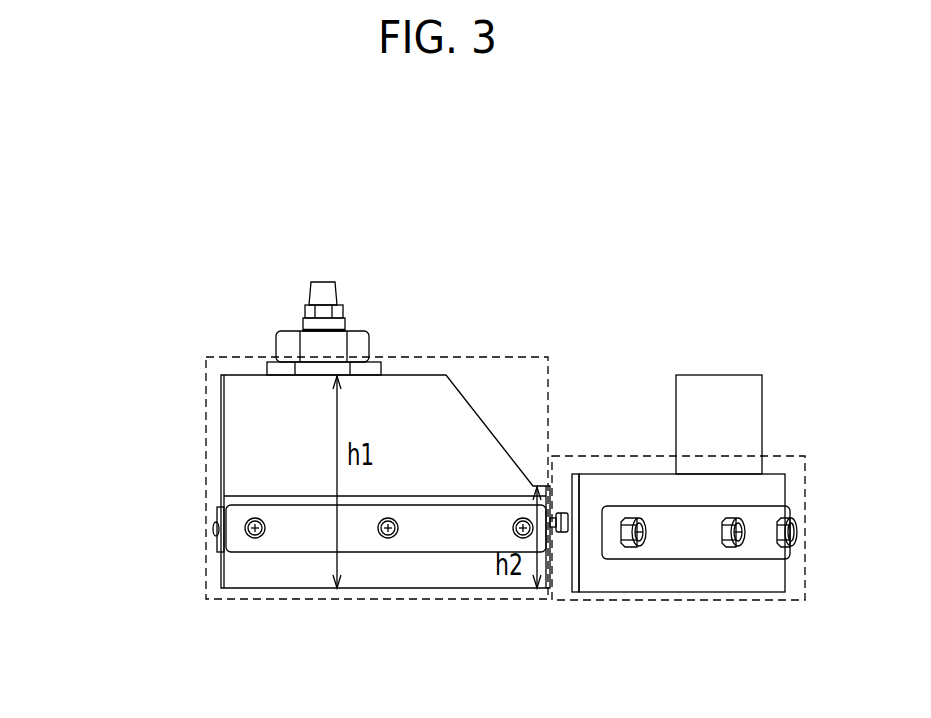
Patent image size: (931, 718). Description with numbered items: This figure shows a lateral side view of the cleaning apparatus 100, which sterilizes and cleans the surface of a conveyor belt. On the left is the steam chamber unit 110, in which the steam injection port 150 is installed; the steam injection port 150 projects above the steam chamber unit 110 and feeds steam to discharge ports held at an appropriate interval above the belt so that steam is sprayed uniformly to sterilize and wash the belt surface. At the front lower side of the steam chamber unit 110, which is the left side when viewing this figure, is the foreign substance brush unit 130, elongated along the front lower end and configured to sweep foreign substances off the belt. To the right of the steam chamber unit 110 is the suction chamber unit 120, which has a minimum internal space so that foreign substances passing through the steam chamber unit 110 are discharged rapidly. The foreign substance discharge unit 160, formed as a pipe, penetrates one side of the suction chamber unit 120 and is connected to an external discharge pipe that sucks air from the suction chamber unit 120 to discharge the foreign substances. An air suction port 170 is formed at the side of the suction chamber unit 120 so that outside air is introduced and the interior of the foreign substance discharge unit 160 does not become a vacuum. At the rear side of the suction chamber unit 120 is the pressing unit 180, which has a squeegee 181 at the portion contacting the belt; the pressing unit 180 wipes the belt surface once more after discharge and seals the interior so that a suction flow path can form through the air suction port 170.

The cleaning apparatus 100 is at (156, 349).
The steam chamber unit 110 is at (457, 357).
The suction chamber unit 120 is at (678, 525).
The foreign substance brush unit 130 is at (215, 572).
The steam injection port 150 is at (322, 281).
The foreign substance discharge unit 160 is at (743, 428).
The air suction port 170 is at (565, 537).
The pressing unit 180 is at (717, 578).
The squeegee 181 is at (668, 542).